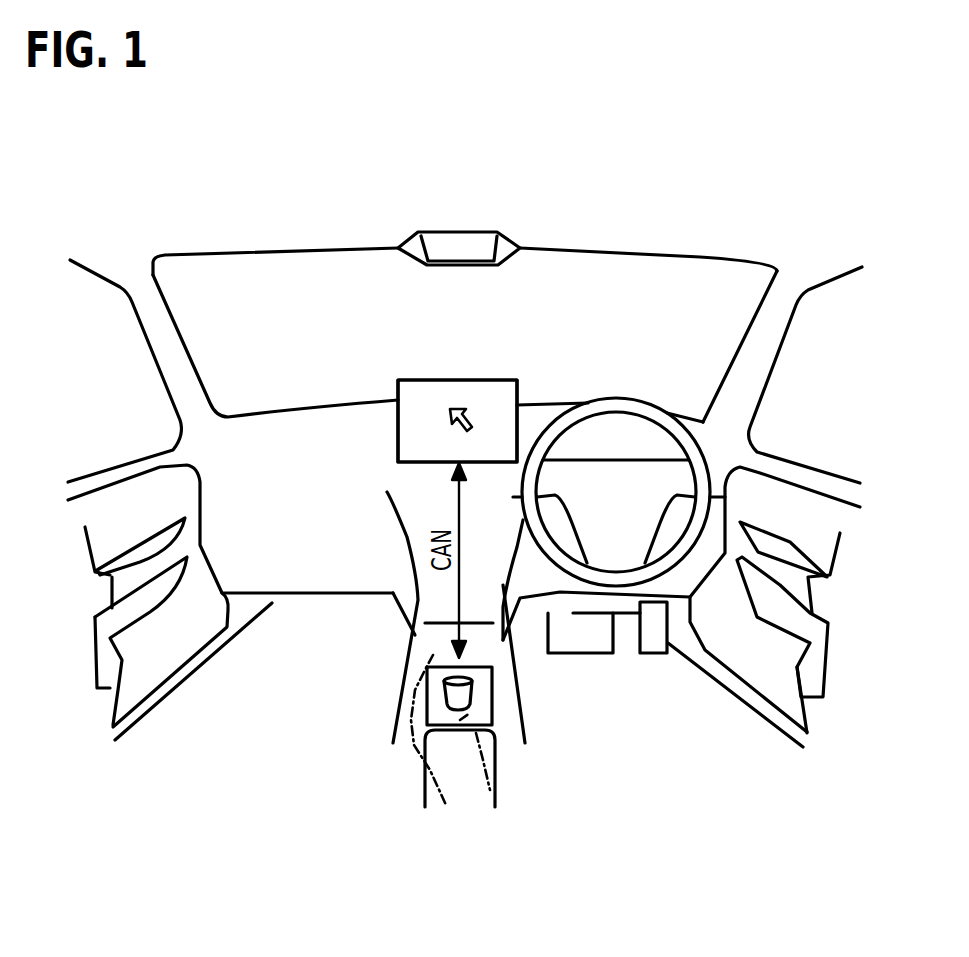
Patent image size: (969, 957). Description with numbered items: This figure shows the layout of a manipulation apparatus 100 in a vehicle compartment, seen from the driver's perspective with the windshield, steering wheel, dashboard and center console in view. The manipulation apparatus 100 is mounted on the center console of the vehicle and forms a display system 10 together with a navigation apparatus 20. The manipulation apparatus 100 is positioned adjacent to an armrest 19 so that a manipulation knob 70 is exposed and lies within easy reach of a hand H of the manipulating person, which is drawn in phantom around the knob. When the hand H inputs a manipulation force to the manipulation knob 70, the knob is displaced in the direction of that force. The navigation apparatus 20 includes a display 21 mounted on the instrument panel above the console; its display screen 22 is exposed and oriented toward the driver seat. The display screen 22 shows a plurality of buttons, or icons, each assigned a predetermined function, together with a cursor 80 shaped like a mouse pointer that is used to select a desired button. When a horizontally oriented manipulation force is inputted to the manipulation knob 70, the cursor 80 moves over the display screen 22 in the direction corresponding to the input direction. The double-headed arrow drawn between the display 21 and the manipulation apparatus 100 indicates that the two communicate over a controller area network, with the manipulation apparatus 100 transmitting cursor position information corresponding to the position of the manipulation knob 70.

The display system 10 is at (328, 627).
The armrest 19 is at (423, 780).
The navigation apparatus 20 is at (398, 440).
The display 21 is at (470, 378).
The display screen 22 is at (423, 392).
The manipulation knob 70 is at (472, 681).
The cursor 80 is at (460, 407).
The manipulation apparatus 100 is at (425, 693).
The hand H is at (493, 707).